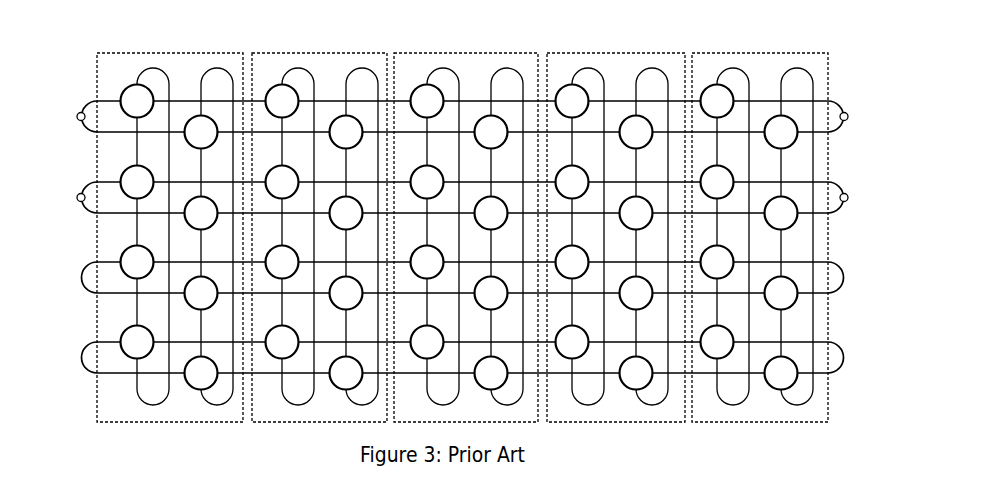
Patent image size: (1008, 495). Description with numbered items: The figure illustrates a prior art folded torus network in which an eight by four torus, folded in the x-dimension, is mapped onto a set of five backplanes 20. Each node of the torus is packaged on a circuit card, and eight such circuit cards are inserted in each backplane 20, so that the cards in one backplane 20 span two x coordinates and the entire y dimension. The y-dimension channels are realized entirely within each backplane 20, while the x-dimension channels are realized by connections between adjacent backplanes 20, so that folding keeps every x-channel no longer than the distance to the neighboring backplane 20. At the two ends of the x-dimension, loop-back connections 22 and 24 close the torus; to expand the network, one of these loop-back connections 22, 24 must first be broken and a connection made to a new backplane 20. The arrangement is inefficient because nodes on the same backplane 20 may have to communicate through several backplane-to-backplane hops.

The backplane 20 is at (172, 53).
The loop-back connection 22 is at (77, 117).
The loop-back connection 24 is at (848, 117).